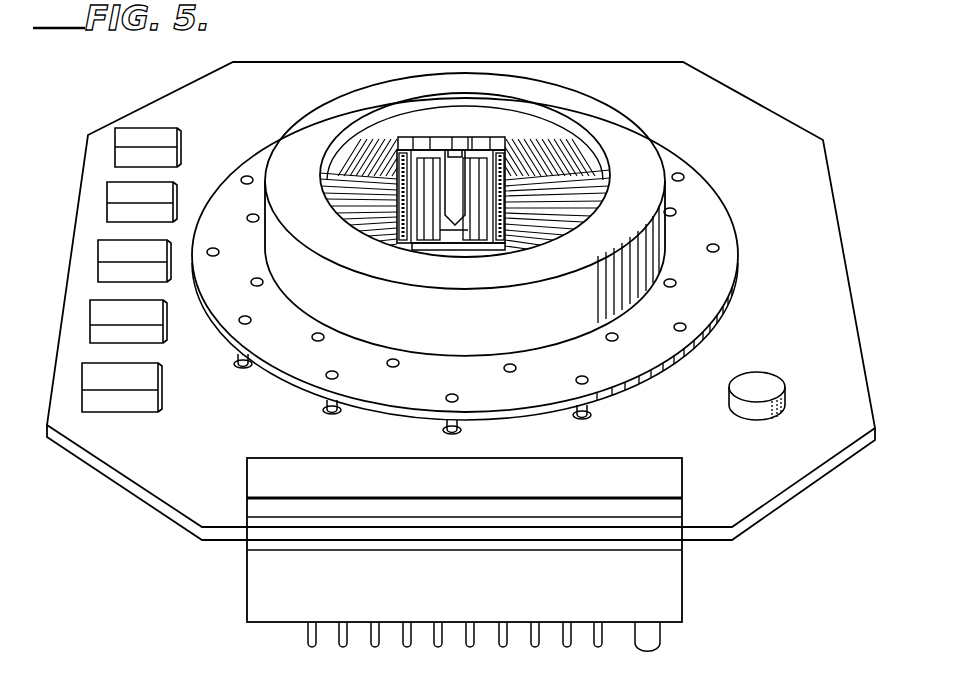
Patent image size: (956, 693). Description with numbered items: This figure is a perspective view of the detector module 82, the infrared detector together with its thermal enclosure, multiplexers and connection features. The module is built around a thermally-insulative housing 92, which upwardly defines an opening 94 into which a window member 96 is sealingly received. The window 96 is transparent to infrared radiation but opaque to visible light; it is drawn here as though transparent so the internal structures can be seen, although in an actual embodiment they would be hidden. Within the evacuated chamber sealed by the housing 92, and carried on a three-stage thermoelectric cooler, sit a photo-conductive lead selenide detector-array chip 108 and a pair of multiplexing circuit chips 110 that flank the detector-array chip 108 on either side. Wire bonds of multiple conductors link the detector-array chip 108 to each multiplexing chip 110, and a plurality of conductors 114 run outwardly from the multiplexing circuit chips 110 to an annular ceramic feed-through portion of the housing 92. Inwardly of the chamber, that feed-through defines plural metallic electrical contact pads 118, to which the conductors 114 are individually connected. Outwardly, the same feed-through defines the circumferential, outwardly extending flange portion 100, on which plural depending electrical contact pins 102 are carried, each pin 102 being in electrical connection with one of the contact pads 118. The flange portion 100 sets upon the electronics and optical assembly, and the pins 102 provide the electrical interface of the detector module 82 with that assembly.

The detector module 82 is at (690, 124).
The thermally-insulative housing 92 is at (658, 266).
The opening 94 is at (568, 128).
The window member 96 is at (466, 105).
The flange portion 100 is at (722, 316).
The electrical contact pins 102 is at (245, 357).
The detector-array chip 108 is at (453, 236).
The multiplexing circuit chips 110 is at (492, 150).
The conductors 114 is at (350, 210).
The electrical contact pads 118 is at (344, 166).